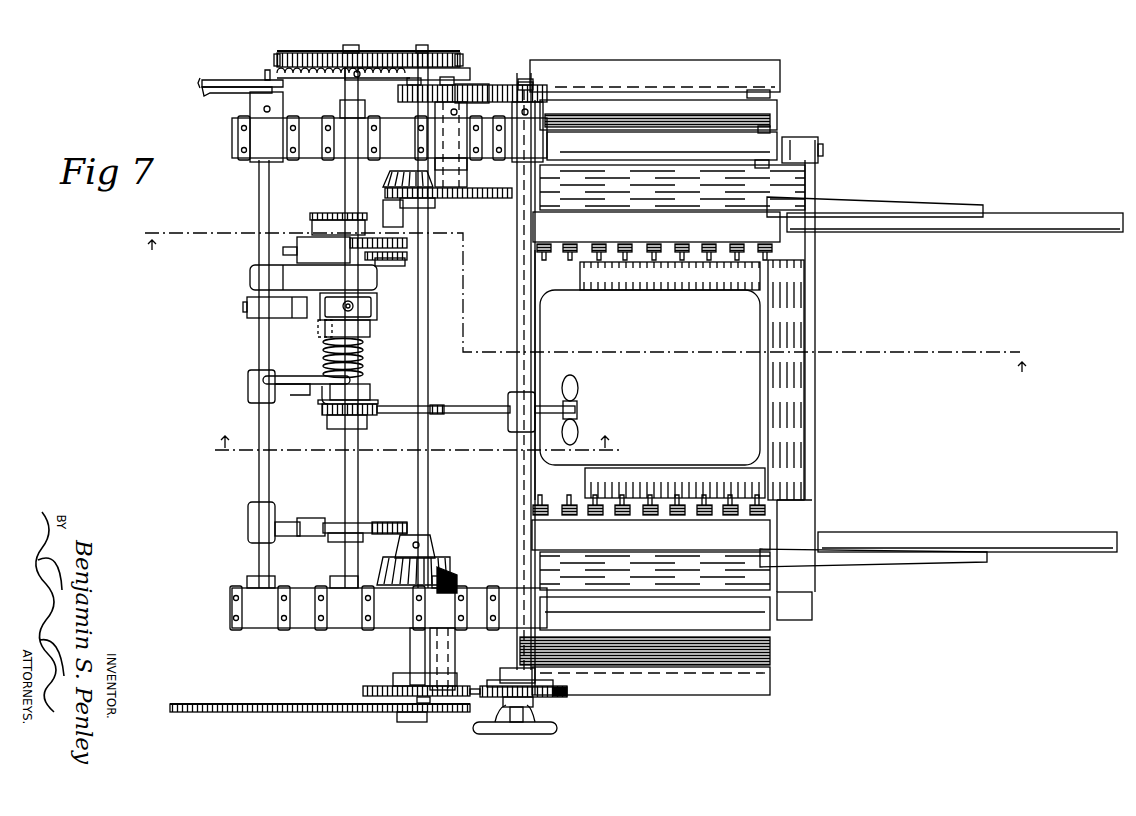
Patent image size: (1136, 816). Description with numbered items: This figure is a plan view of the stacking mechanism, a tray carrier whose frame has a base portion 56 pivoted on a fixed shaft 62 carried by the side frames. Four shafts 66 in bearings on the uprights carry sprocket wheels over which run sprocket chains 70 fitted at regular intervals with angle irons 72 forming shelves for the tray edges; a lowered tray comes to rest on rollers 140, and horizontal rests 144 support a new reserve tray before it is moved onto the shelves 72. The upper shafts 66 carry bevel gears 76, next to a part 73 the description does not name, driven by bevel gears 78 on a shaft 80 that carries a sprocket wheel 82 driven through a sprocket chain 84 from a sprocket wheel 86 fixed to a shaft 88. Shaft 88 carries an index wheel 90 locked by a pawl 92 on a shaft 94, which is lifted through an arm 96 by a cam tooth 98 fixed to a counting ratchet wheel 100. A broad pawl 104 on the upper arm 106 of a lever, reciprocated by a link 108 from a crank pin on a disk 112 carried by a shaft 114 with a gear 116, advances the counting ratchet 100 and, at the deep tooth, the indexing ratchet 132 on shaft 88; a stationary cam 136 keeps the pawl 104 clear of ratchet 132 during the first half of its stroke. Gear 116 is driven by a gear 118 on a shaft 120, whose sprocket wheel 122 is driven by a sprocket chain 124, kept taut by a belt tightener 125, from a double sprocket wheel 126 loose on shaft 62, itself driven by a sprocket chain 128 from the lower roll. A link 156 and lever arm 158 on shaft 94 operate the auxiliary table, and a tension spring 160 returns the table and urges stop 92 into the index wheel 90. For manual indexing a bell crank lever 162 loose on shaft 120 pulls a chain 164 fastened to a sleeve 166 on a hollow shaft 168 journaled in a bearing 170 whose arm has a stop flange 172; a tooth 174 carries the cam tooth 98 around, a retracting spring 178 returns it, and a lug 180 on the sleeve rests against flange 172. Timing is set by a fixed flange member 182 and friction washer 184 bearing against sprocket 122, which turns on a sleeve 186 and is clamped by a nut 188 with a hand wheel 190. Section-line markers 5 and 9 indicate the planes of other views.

The section line 5- 5 is at (575, 298).
The section line 9- 9 is at (409, 448).
The base portion 56 is at (765, 332).
The fixed shaft 62 is at (410, 648).
The shafts 66 is at (823, 151).
The sprocket chains 70 is at (775, 131).
The angle irons 72 is at (708, 68).
The bevel gear hub 73 is at (436, 545).
The bevel gears 76 is at (448, 575).
The bevel gears 78 is at (390, 178).
The shaft 80 is at (420, 46).
The sprocket wheel 82 is at (457, 56).
The sprocket chain 84 is at (275, 62).
The sprocket wheel 86 is at (315, 36).
The shaft 88 is at (358, 33).
The index wheel 90 is at (398, 506).
The pawl 92 is at (325, 503).
The shaft 94 is at (258, 196).
The arm 96 is at (297, 318).
The cam tooth 98 is at (375, 300).
The counting ratchet wheel 100 is at (393, 260).
The broad pawl 104 is at (313, 250).
The upper arm 106 is at (340, 213).
The link 108 is at (403, 218).
The disk 112 is at (478, 198).
The shaft 114 is at (462, 85).
The gear 116 is at (476, 85).
The gear 118 is at (546, 86).
The shaft 120 is at (533, 334).
The sprocket wheel 122 is at (540, 695).
The sprocket chain 124 is at (480, 680).
The belt tightener 125 is at (437, 710).
The double sprocket wheel 126 is at (363, 692).
The sprocket chain 128 is at (258, 703).
The indexing ratchet 132 is at (407, 243).
The stationary cam 136 is at (360, 268).
The rollers 140 is at (646, 250).
The horizontal rests 144 is at (957, 222).
The link 156 is at (228, 84).
The lever arm 158 is at (232, 95).
The tension spring 160 is at (278, 73).
The bell crank lever 162 is at (478, 392).
The chain 164 is at (378, 402).
The sleeve 166 is at (350, 425).
The hollow shaft 168 is at (363, 352).
The bearing 170 is at (363, 370).
The stop flange 172 is at (303, 384).
The tooth 174 is at (318, 333).
The retracting spring 178 is at (330, 365).
The lug 180 is at (318, 400).
The fixed flange member 182 is at (535, 672).
The friction washer 184 is at (560, 692).
The sleeve 186 is at (530, 705).
The nut 188 is at (533, 717).
The hand wheel 190 is at (497, 728).